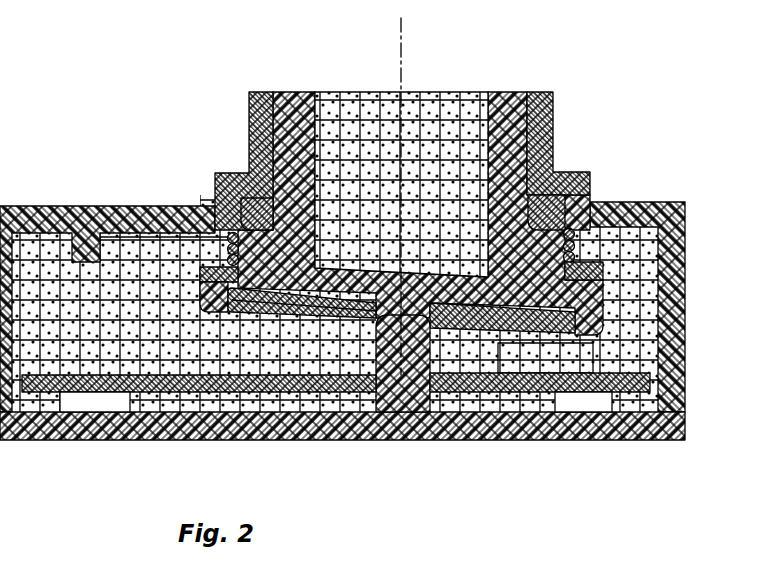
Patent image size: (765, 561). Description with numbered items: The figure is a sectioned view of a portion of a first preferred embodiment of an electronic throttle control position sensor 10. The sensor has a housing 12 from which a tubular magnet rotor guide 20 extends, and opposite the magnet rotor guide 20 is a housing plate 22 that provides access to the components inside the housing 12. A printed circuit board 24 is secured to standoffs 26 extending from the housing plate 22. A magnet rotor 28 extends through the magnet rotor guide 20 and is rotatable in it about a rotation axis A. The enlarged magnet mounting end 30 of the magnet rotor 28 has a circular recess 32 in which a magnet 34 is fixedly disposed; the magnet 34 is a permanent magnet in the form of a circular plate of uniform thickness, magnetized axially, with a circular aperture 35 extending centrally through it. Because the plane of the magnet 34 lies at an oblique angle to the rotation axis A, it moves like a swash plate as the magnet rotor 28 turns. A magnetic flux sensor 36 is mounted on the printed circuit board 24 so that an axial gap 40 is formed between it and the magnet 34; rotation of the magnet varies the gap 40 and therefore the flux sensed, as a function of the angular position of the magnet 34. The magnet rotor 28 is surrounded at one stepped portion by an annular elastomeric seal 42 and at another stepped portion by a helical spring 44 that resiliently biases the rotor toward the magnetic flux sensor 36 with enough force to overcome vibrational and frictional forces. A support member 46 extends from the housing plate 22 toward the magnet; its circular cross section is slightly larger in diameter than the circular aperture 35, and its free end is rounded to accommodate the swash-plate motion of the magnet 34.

The electronic throttle control position sensor 10 is at (138, 84).
The housing 12 is at (82, 206).
The magnet rotor guide 20 is at (249, 122).
The housing plate 22 is at (100, 442).
The printed circuit board 24 is at (87, 376).
The standoffs 26 is at (143, 376).
The magnet rotor 28 is at (507, 92).
The magnet mounting end 30 is at (213, 312).
The circular recess 32 is at (235, 305).
The magnet 34 is at (286, 318).
The circular aperture 35 is at (420, 317).
The magnetic flux sensor 36 is at (595, 357).
The gap 40 is at (608, 342).
The annular elastomeric seal 42 is at (578, 212).
The helical spring 44 is at (577, 242).
The support member 46 is at (432, 345).
The rotation axis A is at (398, 36).